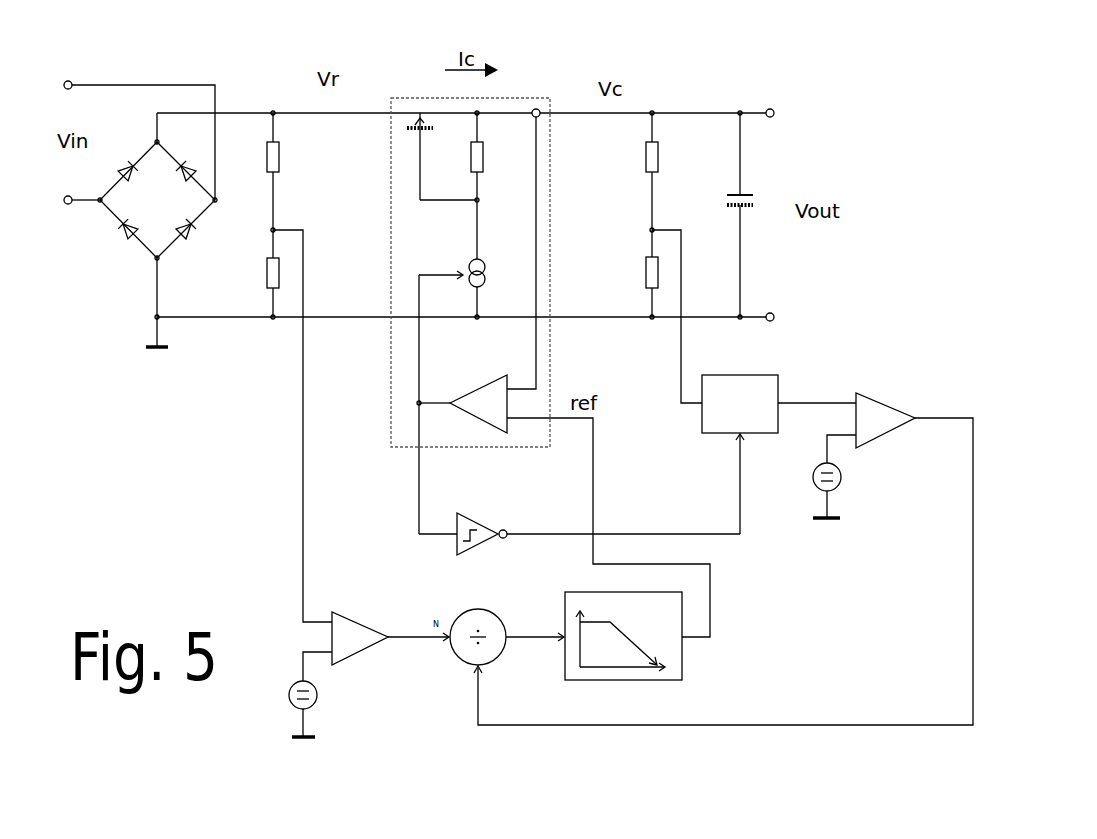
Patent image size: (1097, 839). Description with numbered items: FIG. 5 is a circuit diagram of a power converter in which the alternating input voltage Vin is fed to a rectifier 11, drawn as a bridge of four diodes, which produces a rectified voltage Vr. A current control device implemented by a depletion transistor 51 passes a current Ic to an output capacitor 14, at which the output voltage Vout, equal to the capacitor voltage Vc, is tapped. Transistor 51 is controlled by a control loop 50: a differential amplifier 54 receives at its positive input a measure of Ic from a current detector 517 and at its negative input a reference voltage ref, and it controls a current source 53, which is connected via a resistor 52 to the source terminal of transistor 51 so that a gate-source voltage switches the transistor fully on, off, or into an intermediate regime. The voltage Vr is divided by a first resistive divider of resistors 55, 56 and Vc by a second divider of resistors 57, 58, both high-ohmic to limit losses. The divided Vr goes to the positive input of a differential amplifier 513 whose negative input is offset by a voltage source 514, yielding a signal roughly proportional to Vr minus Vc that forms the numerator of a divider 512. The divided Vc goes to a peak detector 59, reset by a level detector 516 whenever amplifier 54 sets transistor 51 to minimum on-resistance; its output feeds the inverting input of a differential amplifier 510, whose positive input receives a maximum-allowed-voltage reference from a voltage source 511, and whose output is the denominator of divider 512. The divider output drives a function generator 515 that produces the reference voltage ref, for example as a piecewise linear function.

The rectifier 11 is at (117, 291).
The output capacitor 14 is at (748, 189).
The control loop 50 is at (548, 145).
The depletion transistor 51 is at (407, 123).
The resistor 52 is at (482, 152).
The current source 53 is at (483, 267).
The differential amplifier 54 is at (467, 393).
The resistor 55 is at (282, 165).
The resistor 56 is at (263, 275).
The resistor 57 is at (658, 163).
The resistor 58 is at (642, 268).
The peak detector 59 is at (761, 376).
The differential amplifier 510 is at (863, 391).
The voltage source 511 is at (843, 483).
The divider 512 is at (480, 607).
The differential amplifier 513 is at (336, 608).
The voltage source 514 is at (317, 698).
The function generator 515 is at (684, 668).
The level detector 516 is at (473, 519).
The current detector 517 is at (536, 102).